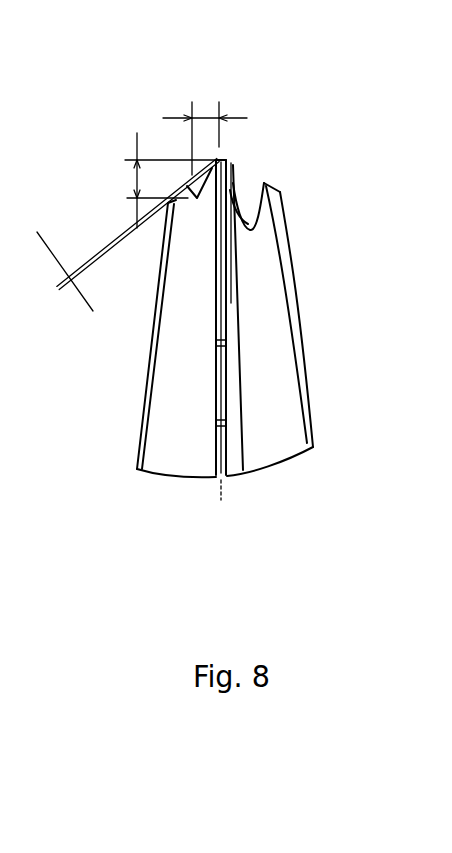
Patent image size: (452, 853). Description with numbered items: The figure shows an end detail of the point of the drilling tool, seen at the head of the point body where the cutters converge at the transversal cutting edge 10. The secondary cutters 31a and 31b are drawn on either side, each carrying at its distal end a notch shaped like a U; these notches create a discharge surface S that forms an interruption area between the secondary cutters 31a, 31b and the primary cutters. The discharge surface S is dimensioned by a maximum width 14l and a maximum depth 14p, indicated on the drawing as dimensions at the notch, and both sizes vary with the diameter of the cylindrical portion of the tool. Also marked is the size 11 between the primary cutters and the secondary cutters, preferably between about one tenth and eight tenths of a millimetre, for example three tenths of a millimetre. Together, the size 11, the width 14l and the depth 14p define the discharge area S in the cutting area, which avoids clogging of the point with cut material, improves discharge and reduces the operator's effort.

The transversal cutting edge 10 is at (232, 153).
The size 11 is at (60, 287).
The maximum width 14l is at (218, 148).
The maximum depth 14p is at (130, 171).
The secondary cutter 31a is at (297, 283).
The secondary cutter 31b is at (157, 308).
The discharge surface S is at (243, 197).